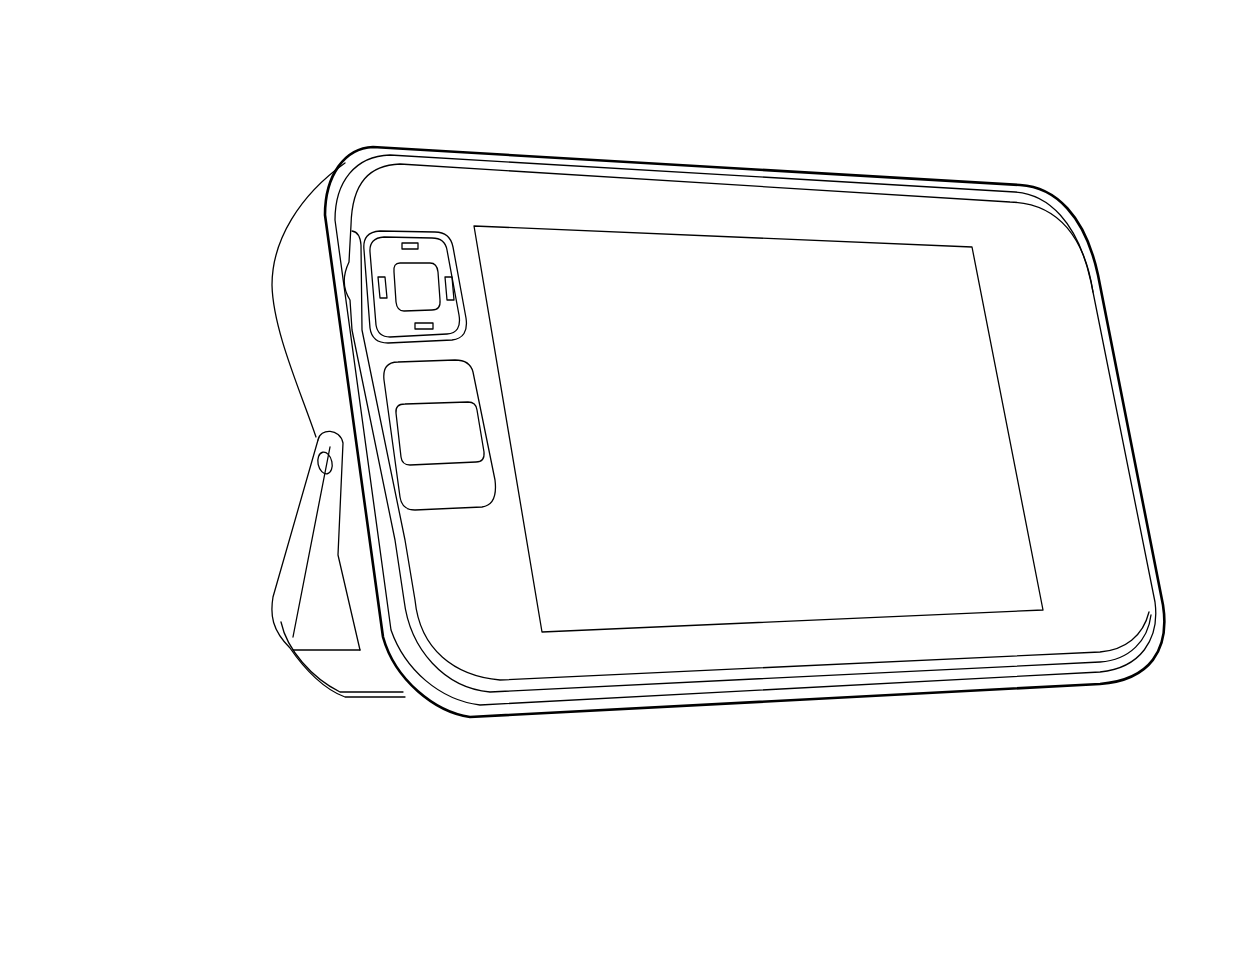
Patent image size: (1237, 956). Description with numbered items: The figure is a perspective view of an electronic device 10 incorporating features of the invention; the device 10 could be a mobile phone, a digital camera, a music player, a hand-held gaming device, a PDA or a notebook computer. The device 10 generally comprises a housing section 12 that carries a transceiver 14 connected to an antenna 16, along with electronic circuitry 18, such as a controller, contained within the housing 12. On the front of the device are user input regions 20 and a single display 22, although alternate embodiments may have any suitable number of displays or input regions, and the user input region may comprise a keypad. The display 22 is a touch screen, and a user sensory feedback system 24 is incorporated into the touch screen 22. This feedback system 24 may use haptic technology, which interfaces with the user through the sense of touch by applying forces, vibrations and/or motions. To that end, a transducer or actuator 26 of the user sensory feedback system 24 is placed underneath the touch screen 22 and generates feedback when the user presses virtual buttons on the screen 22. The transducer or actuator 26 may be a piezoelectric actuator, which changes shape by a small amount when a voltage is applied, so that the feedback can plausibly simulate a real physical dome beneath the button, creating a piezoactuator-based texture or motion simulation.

The electronic device 10 is at (307, 122).
The housing section 12 is at (872, 184).
The transceiver 14 is at (1022, 296).
The antenna 16 is at (1002, 248).
The electronic circuitry 18 is at (1038, 360).
The user input regions 20 is at (340, 287).
The display 22 is at (998, 580).
The user sensory feedback system 24 is at (812, 537).
The transducer or actuator 26 is at (620, 308).